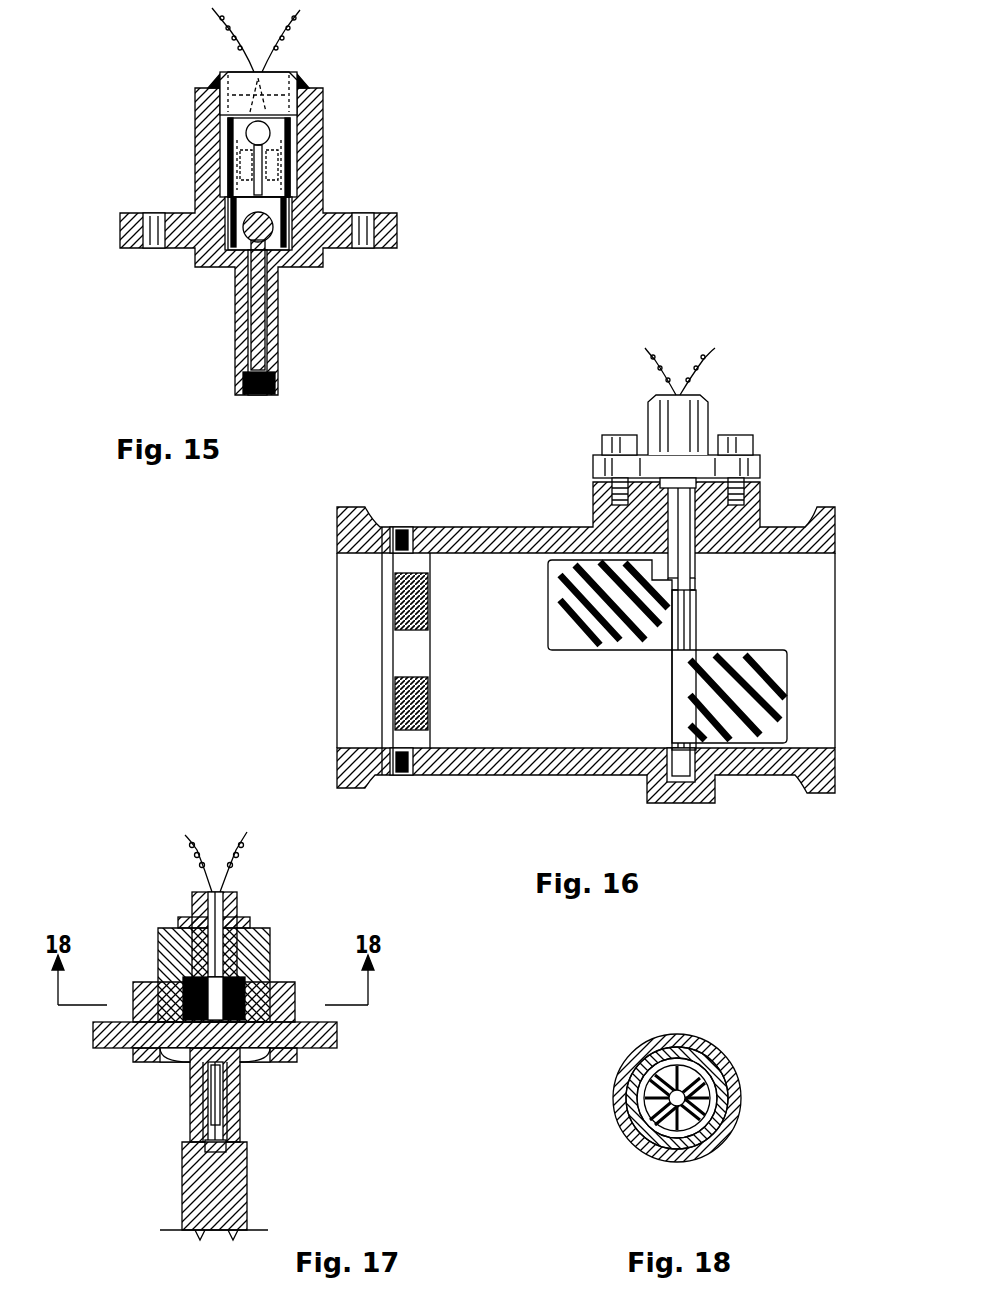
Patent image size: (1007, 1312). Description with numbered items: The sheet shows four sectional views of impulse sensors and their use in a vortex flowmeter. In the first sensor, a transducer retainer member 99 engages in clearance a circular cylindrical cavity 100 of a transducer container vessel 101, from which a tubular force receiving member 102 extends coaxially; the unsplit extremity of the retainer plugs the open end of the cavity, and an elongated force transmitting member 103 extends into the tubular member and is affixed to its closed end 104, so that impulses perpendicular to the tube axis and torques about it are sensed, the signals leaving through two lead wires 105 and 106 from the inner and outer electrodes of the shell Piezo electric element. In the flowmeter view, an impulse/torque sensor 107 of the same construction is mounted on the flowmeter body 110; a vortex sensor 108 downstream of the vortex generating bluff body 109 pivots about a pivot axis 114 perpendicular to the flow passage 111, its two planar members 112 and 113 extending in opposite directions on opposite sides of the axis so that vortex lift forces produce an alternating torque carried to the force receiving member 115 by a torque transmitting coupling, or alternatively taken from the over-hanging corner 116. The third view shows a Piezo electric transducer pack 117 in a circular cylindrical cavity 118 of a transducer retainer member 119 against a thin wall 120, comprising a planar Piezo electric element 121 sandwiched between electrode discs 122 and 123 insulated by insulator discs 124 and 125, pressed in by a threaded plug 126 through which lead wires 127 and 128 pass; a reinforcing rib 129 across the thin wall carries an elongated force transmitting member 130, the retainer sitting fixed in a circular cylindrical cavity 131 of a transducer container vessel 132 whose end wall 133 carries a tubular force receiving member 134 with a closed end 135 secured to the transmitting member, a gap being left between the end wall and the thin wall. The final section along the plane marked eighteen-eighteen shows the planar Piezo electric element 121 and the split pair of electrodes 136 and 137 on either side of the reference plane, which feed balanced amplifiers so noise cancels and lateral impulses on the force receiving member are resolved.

In FIG. 15, the transducer retainer member 99 is at (300, 135).
In FIG. 15, the circular cylindrical cavity 100 is at (200, 165).
In FIG. 15, the transducer container vessel 101 is at (318, 250).
In FIG. 15, the tubular force receiving member 102 is at (240, 290).
In FIG. 15, the elongated force transmitting member 103 is at (270, 290).
In FIG. 15, the closed end 104 is at (245, 375).
In FIG. 15, the lead wire 105 is at (240, 40).
In FIG. 15, the lead wire 106 is at (278, 40).
In FIG. 16, the impulse/torque sensor 107 is at (665, 428).
In FIG. 16, the vortex sensor 108 is at (670, 648).
In FIG. 16, the vortex generating bluff body 109 is at (405, 655).
In FIG. 16, the flowmeter body 110 is at (750, 765).
In FIG. 16, the flow passage 111 is at (487, 690).
In FIG. 16, the planar member 112 is at (548, 605).
In FIG. 16, the planar member 113 is at (785, 690).
In FIG. 16, the pivot axis 114 is at (690, 592).
In FIG. 16, the force receiving member 115 is at (775, 520).
In FIG. 16, the over-hanging corner 116 is at (572, 570).
In FIG. 17, the Piezo electric transducer pack 117 is at (255, 975).
In FIG. 17, the circular cylindrical cavity 118 is at (165, 990).
In FIG. 18, the circular cylindrical cavity 118 is at (715, 1060).
In FIG. 17, the transducer retainer member 119 is at (337, 1036).
In FIG. 18, the transducer retainer member 119 is at (645, 1060).
In FIG. 17, the thin wall 120 is at (248, 1070).
In FIG. 17, the planar Piezo electric element 121 is at (125, 1055).
In FIG. 18, the planar Piezo electric element 121 is at (628, 1090).
In FIG. 17, the electrode disc 122 is at (200, 930).
In FIG. 17, the electrode disc 123 is at (170, 1070).
In FIG. 17, the insulator disc 124 is at (245, 985).
In FIG. 17, the insulator disc 125 is at (290, 1055).
In FIG. 17, the plug 126 is at (200, 890).
In FIG. 17, the lead wire 127 is at (195, 855).
In FIG. 17, the lead wire 128 is at (235, 855).
In FIG. 17, the reinforcing rib 129 is at (245, 1110).
In FIG. 17, the elongated force transmitting member 130 is at (180, 1120).
In FIG. 17, the circular cylindrical cavity 131 is at (290, 1000).
In FIG. 18, the circular cylindrical cavity 131 is at (670, 1160).
In FIG. 17, the transducer container vessel 132 is at (145, 1000).
In FIG. 18, the transducer container vessel 132 is at (735, 1120).
In FIG. 17, the end wall 133 is at (200, 1105).
In FIG. 17, the tubular force receiving member 134 is at (240, 1120).
In FIG. 17, the closed end 135 is at (205, 1185).
In FIG. 18, the electrode 136 is at (640, 1110).
In FIG. 18, the electrode 137 is at (710, 1098).